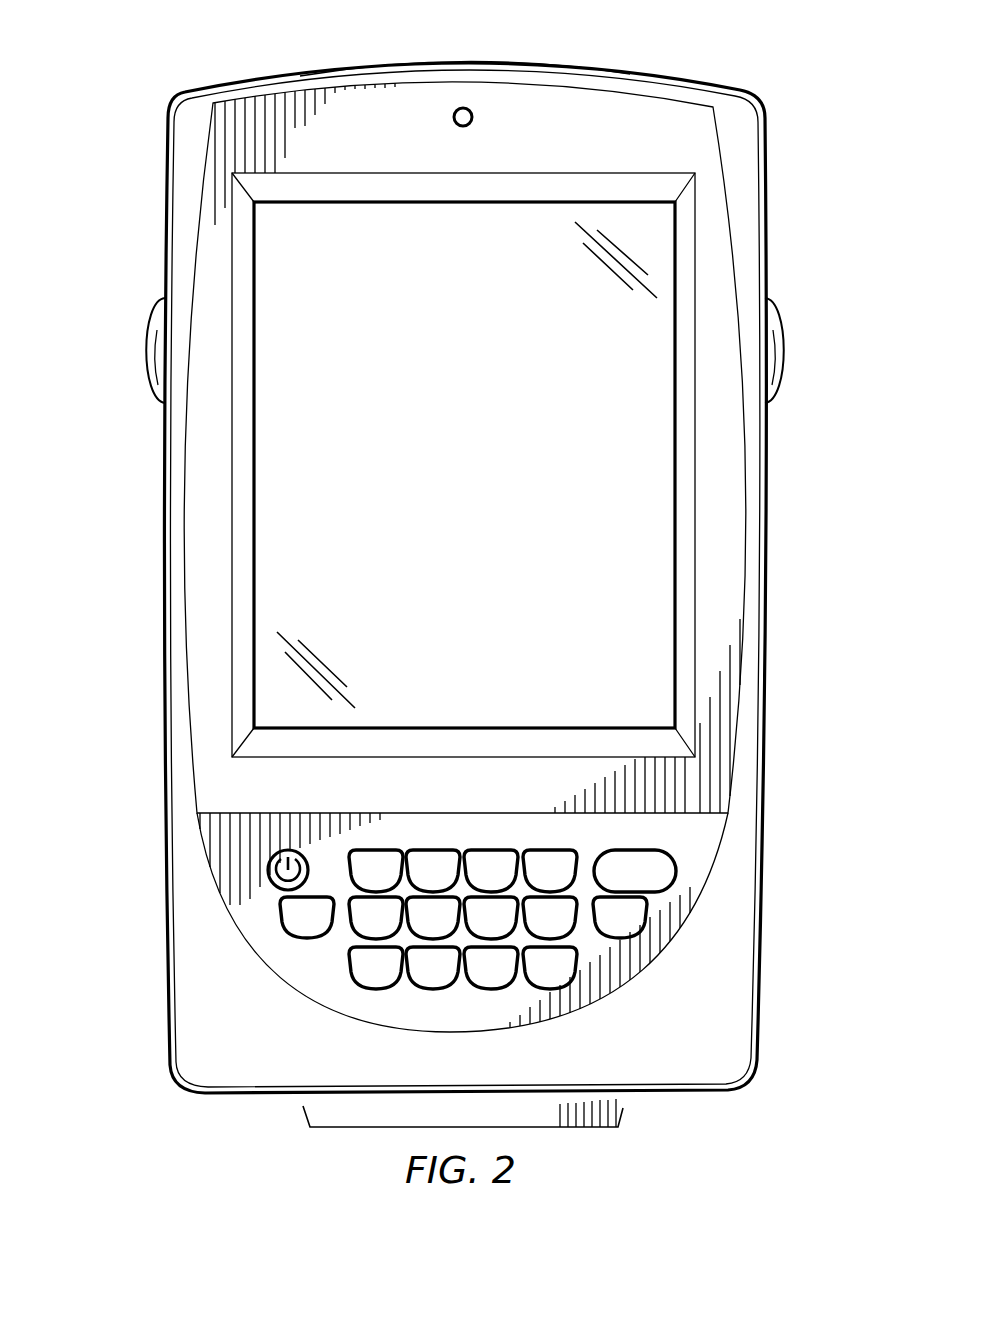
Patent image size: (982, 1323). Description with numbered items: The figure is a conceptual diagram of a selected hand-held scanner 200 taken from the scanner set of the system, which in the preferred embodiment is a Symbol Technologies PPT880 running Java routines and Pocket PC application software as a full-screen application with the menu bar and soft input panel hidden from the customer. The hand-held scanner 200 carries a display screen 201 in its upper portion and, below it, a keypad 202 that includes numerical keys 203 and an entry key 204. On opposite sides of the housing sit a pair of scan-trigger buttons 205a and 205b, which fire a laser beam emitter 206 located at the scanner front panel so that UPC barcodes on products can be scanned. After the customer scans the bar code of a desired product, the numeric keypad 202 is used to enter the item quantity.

The hand-held scanner 200 is at (766, 205).
The display screen 201 is at (487, 438).
The keypad 202 is at (305, 976).
The numerical keys 203 is at (545, 850).
The entry key 204 is at (672, 852).
The scan-trigger button 205a is at (148, 340).
The scan-trigger button 205b is at (782, 342).
The laser beam emitter 206 is at (402, 66).